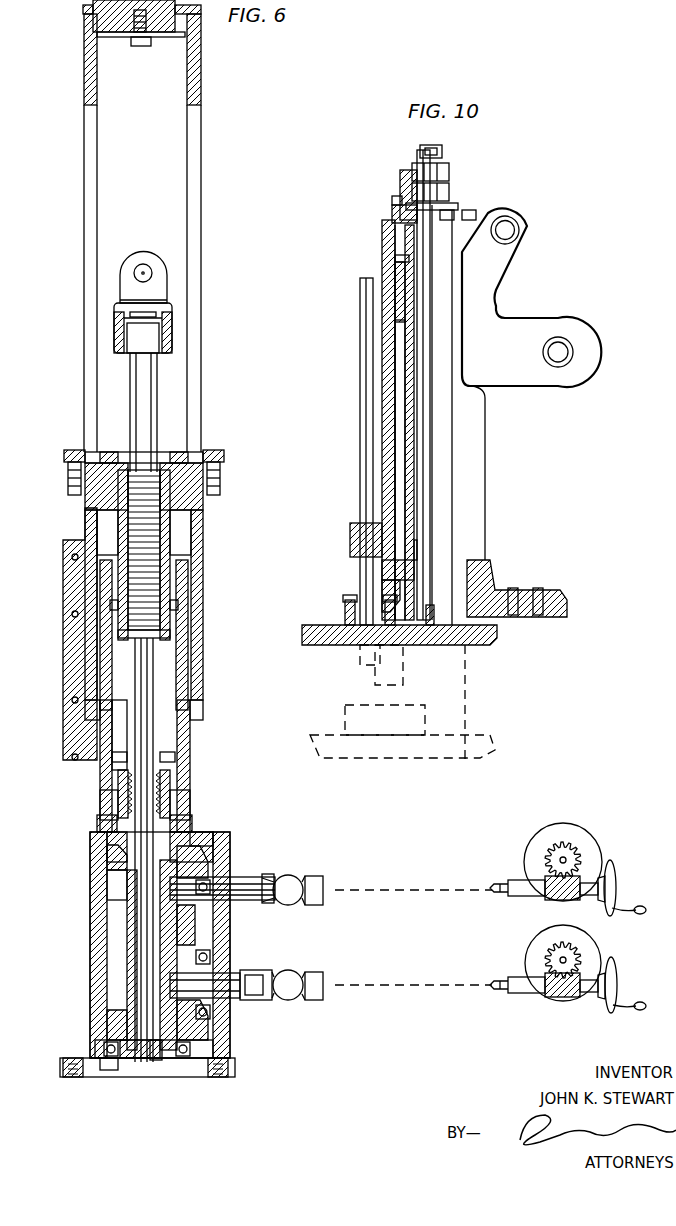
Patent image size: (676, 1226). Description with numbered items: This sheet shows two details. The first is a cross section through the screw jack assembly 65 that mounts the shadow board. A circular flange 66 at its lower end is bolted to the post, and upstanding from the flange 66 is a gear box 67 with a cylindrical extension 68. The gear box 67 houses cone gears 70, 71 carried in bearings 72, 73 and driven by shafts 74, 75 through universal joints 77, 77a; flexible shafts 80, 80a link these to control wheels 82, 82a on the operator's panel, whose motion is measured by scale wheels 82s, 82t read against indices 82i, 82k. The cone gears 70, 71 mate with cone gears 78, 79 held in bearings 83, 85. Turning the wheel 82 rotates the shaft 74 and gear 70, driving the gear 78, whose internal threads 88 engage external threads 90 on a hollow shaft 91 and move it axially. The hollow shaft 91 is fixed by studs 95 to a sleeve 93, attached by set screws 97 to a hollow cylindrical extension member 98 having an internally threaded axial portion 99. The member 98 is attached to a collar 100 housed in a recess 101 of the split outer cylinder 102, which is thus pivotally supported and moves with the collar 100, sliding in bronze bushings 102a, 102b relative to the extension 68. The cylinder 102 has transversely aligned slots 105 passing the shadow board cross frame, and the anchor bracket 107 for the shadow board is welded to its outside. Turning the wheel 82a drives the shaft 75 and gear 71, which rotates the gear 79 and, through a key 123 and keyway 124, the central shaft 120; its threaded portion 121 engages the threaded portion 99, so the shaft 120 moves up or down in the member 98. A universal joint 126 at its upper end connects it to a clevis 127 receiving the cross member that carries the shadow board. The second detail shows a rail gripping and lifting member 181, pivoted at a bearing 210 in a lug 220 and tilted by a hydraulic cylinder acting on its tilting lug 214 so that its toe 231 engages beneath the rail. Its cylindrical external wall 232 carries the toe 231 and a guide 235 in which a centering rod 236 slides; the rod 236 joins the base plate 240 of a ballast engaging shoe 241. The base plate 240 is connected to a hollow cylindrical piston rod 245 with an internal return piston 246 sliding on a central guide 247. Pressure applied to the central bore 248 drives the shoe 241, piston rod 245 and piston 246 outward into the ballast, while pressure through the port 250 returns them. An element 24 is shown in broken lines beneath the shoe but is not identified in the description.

In FIG. 6, the split outer cylinder 102 is at (201, 86).
In FIG. 6, the transversely aligned slots 105 is at (84, 297).
In FIG. 6, the clevis 127 is at (143, 253).
In FIG. 6, the universal joint 126 is at (168, 340).
In FIG. 6, the threaded portion 121 is at (192, 460).
In FIG. 6, the recess 101 is at (70, 488).
In FIG. 6, the collar 100 is at (198, 506).
In FIG. 6, the hollow cylindrical extension member 98 is at (185, 540).
In FIG. 6, the bronze bushing 102b is at (188, 582).
In FIG. 6, the set screws 97 is at (165, 606).
In FIG. 6, the internally threaded axial portion 99 is at (160, 622).
In FIG. 6, the anchor bracket 107 is at (70, 546).
In FIG. 6, the central shaft 120 is at (148, 697).
In FIG. 6, the screw jack assembly 65 is at (222, 696).
In FIG. 6, the sleeve 93 is at (168, 728).
In FIG. 6, the studs 95 is at (170, 760).
In FIG. 6, the hollow shaft 91 is at (128, 788).
In FIG. 6, the external threads 90 is at (160, 798).
In FIG. 6, the cylindrical extension 68 is at (105, 802).
In FIG. 6, the bearings 83 is at (190, 822).
In FIG. 6, the bronze bushing 102a is at (100, 817).
In FIG. 6, the bearings 72 is at (215, 842).
In FIG. 6, the cone gear 78 is at (118, 850).
In FIG. 6, the cone gear 70 is at (215, 866).
In FIG. 6, the internal threads 88 is at (120, 866).
In FIG. 6, the shaft 74 is at (236, 878).
In FIG. 6, the universal joint 77 is at (290, 876).
In FIG. 6, the flexible shaft 80 is at (320, 896).
In FIG. 6, the gear box 67 is at (231, 922).
In FIG. 6, the cone gear 71 is at (228, 962).
In FIG. 6, the universal joint 77a is at (290, 973).
In FIG. 6, the shaft 75 is at (232, 1004).
In FIG. 6, the flexible shaft 80a is at (317, 1001).
In FIG. 6, the bearings 73 is at (218, 1026).
In FIG. 6, the cone gear 79 is at (112, 1022).
In FIG. 6, the bearings 85 is at (108, 1072).
In FIG. 6, the keyway 124 is at (160, 1078).
In FIG. 6, the key 123 is at (172, 1066).
In FIG. 6, the circular flange 66 is at (237, 1069).
In FIG. 6, the scale wheel 82s is at (565, 824).
In FIG. 6, the index 82i is at (598, 824).
In FIG. 6, the control wheel 82 is at (616, 882).
In FIG. 6, the scale wheel 82t is at (542, 940).
In FIG. 6, the index 82k is at (598, 928).
In FIG. 6, the control wheel 82a is at (620, 984).
In FIG. 10, the rail gripping and lifting member 181 is at (366, 267).
In FIG. 10, the tilting lug 214 is at (498, 215).
In FIG. 10, the bearing 210 is at (556, 337).
In FIG. 10, the lug 220 is at (550, 378).
In FIG. 10, the internal return piston 246 is at (405, 300).
In FIG. 10, the cylindrical external wall 232 is at (392, 344).
In FIG. 10, the centering rod 236 is at (365, 437).
In FIG. 10, the central guide 247 is at (418, 472).
In FIG. 10, the hollow cylindrical piston rod 245 is at (408, 481).
In FIG. 10, the guide 235 is at (350, 537).
In FIG. 10, the central bore 248 is at (432, 517).
In FIG. 10, the toe 231 is at (545, 590).
In FIG. 10, the base plate 240 is at (362, 605).
In FIG. 10, the ballast engaging shoe 241 is at (447, 648).
In FIG. 10, the port 250 is at (430, 578).
In FIG. 10, the frame 24 is at (478, 740).